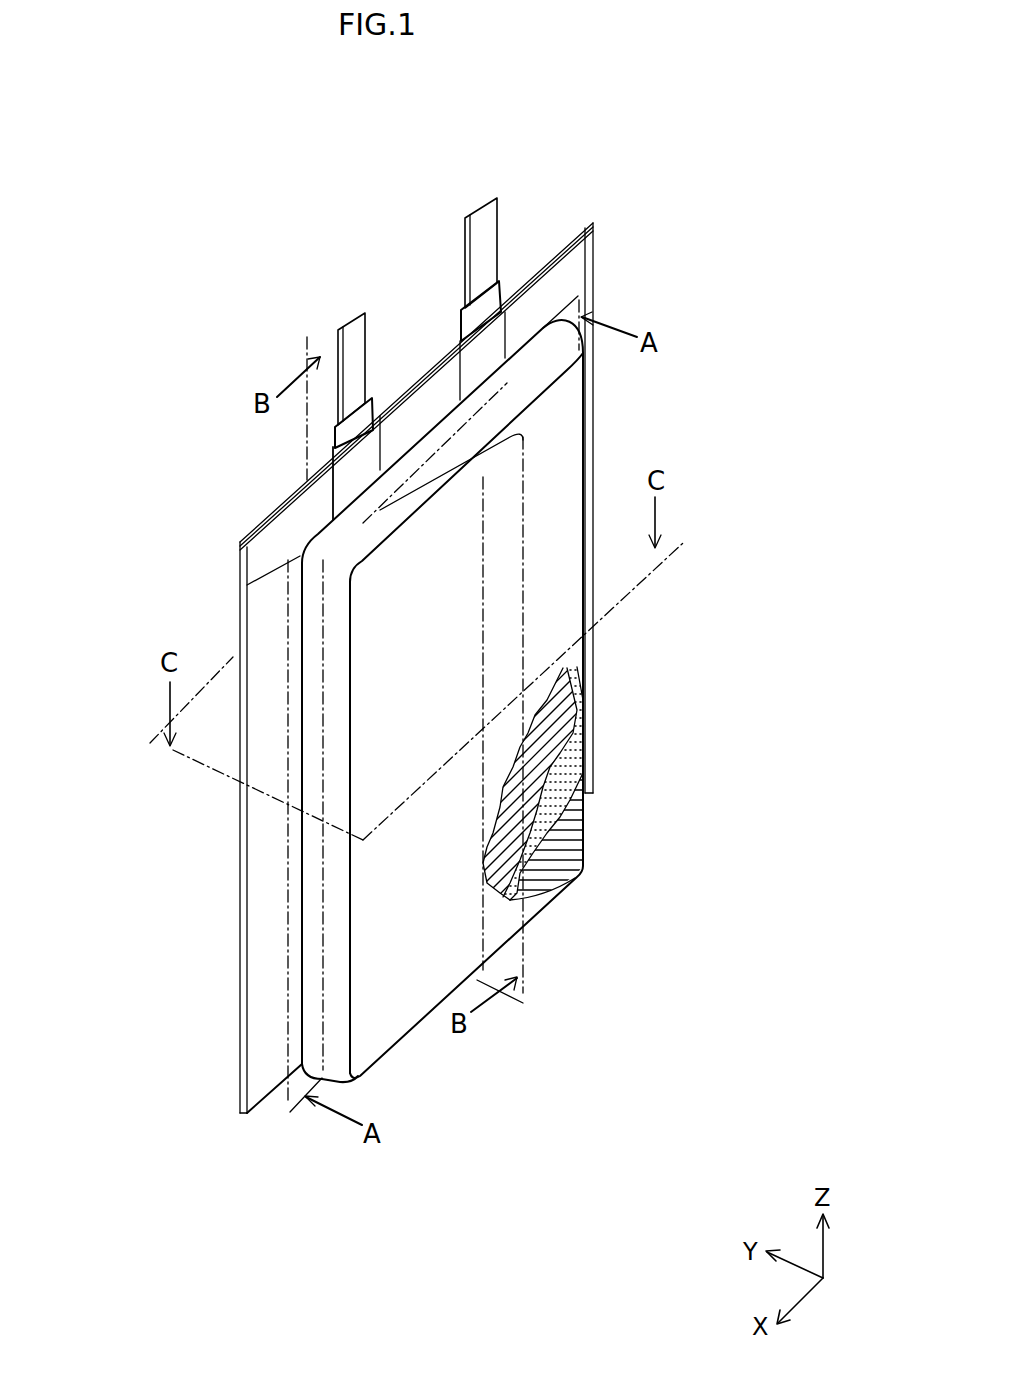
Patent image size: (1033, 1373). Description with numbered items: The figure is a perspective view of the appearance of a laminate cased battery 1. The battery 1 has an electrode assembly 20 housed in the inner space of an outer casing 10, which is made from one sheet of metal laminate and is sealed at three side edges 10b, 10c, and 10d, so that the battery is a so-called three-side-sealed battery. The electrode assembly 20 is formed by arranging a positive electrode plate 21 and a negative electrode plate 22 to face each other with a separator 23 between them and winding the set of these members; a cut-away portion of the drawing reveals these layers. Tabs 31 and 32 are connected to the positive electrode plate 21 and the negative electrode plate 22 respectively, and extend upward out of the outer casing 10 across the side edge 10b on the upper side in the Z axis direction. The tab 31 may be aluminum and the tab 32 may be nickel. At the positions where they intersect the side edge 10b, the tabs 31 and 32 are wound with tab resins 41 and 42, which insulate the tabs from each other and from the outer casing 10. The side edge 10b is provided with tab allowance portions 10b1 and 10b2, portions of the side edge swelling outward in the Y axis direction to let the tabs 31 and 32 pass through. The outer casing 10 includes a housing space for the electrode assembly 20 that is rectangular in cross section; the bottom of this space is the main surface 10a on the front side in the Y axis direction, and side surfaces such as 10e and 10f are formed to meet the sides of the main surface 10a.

The laminate cased battery 1 is at (155, 388).
The outer casing 10 is at (565, 450).
The main surface 10a is at (560, 548).
The side edge 10b is at (533, 313).
The tab allowance portion 10b1 is at (345, 480).
The tab allowance portion 10b2 is at (490, 356).
The side edge 10c is at (585, 390).
The side edge 10d is at (263, 898).
The side surface 10e is at (343, 577).
The side surface 10f is at (310, 863).
The electrode assembly 20 is at (690, 632).
The positive electrode plate 21 is at (570, 690).
The negative electrode plate 22 is at (580, 807).
The separator 23 is at (570, 753).
The tab 31 is at (377, 365).
The tab 32 is at (477, 250).
The tab resin 41 is at (333, 450).
The tab resin 42 is at (467, 323).